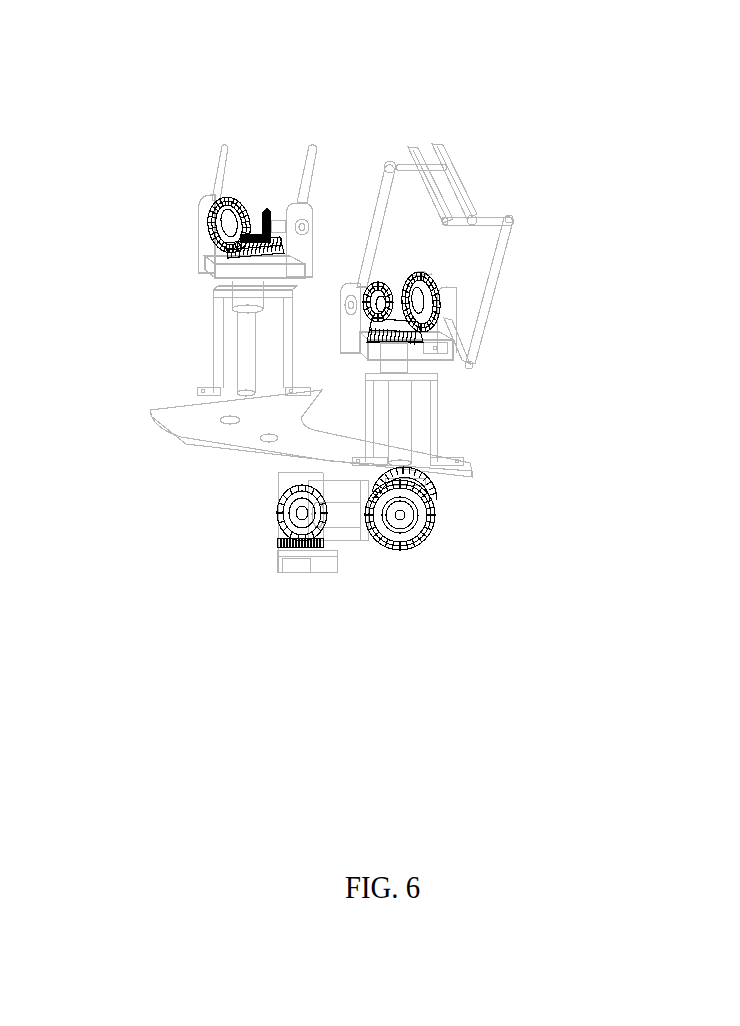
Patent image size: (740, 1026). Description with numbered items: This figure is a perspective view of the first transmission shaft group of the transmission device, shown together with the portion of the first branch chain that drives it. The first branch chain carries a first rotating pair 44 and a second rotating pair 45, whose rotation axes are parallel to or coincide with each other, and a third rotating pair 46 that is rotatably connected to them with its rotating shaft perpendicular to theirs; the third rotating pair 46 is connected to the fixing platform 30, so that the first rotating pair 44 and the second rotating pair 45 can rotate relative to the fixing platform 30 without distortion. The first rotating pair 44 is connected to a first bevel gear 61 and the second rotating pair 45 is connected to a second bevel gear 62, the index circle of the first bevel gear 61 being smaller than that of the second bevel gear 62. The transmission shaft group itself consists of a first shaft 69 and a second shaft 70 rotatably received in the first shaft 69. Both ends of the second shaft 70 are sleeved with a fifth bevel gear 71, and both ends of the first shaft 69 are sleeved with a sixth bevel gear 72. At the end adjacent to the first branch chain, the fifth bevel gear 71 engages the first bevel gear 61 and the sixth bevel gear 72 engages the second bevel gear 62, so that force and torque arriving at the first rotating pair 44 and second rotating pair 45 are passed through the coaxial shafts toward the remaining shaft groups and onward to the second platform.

The fixing platform 30 is at (255, 455).
The first rotating pair 44 is at (373, 303).
The second rotating pair 45 is at (438, 297).
The third rotating pair 46 is at (397, 368).
The first bevel gear 61 is at (383, 293).
The second bevel gear 62 is at (422, 278).
The first shaft 69 is at (400, 432).
The second shaft 70 is at (403, 333).
The fifth bevel gear 71 is at (403, 315).
The sixth bevel gear 72 is at (395, 340).